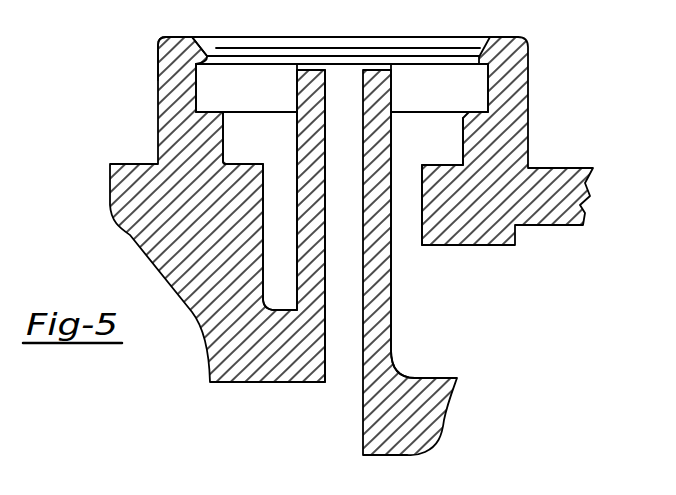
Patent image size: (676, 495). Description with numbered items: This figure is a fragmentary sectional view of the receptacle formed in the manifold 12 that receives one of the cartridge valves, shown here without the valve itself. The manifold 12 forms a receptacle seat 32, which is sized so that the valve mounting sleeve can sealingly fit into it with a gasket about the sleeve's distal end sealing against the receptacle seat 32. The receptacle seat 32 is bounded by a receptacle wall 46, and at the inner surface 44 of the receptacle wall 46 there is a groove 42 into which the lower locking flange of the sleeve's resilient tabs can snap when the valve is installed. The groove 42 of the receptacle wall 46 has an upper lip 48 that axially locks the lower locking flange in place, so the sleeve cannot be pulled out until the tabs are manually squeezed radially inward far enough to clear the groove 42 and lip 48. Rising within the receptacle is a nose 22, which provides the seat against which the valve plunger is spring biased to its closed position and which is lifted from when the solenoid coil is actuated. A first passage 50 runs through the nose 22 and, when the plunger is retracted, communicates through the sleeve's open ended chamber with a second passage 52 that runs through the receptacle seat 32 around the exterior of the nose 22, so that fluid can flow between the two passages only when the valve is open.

The manifold 12 is at (546, 120).
The nose 22 is at (391, 90).
The receptacle seat 32 is at (155, 118).
The groove 42 is at (198, 92).
The inner surface 44 is at (224, 139).
The receptacle wall 46 is at (157, 65).
The upper lip 48 is at (210, 56).
The first passage 50 is at (353, 195).
The second passage 52 is at (403, 237).